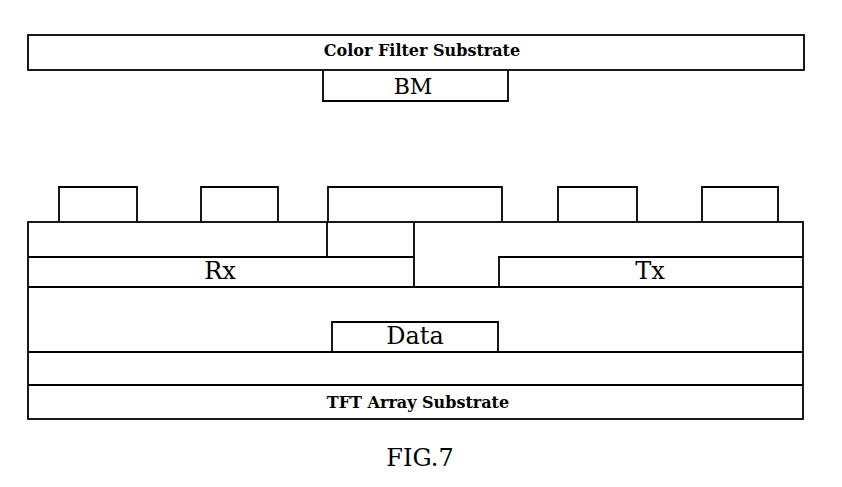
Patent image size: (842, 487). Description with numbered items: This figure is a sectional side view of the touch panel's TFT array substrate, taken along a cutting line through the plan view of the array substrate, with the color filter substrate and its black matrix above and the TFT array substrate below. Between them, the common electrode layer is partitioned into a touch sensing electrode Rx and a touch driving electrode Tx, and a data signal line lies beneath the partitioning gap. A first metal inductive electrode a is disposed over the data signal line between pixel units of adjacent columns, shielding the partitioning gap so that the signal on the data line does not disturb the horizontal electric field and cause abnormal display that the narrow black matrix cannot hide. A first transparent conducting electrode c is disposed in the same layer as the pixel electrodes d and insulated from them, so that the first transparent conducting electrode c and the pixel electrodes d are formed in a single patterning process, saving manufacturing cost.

The first metal inductive electrode a is at (348, 235).
The first transparent conducting electrode c is at (435, 200).
The pixel electrode d is at (117, 208).